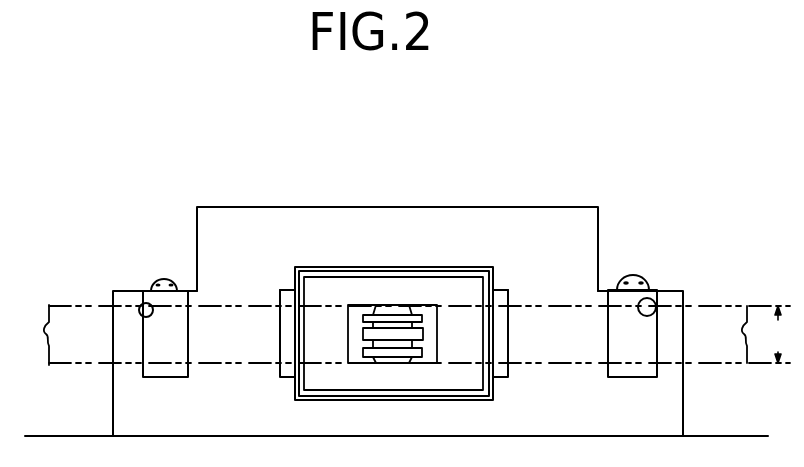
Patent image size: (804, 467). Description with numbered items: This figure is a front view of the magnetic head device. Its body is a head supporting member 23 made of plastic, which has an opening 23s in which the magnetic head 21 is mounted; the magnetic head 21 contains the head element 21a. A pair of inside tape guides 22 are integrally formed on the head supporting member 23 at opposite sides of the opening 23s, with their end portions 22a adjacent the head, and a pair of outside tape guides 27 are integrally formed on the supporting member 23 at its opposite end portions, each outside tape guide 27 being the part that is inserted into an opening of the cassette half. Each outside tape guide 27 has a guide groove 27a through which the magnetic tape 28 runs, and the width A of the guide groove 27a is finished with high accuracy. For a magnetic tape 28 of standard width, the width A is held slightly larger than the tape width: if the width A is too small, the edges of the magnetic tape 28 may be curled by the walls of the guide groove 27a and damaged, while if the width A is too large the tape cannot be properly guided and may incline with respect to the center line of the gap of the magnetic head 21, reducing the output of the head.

The magnetic head 21 is at (363, 273).
The quartz crystal element 21a is at (396, 298).
The inside tape guides 22 is at (284, 342).
The bent end portions of lead terminals 22a is at (285, 305).
The head supporting member 23 is at (502, 212).
The opening 23s is at (324, 276).
The outside tape guide 27 is at (150, 296).
The guide groove 27a is at (142, 311).
The magnetic tape 28 is at (233, 364).
The width of the guide groove A is at (777, 334).